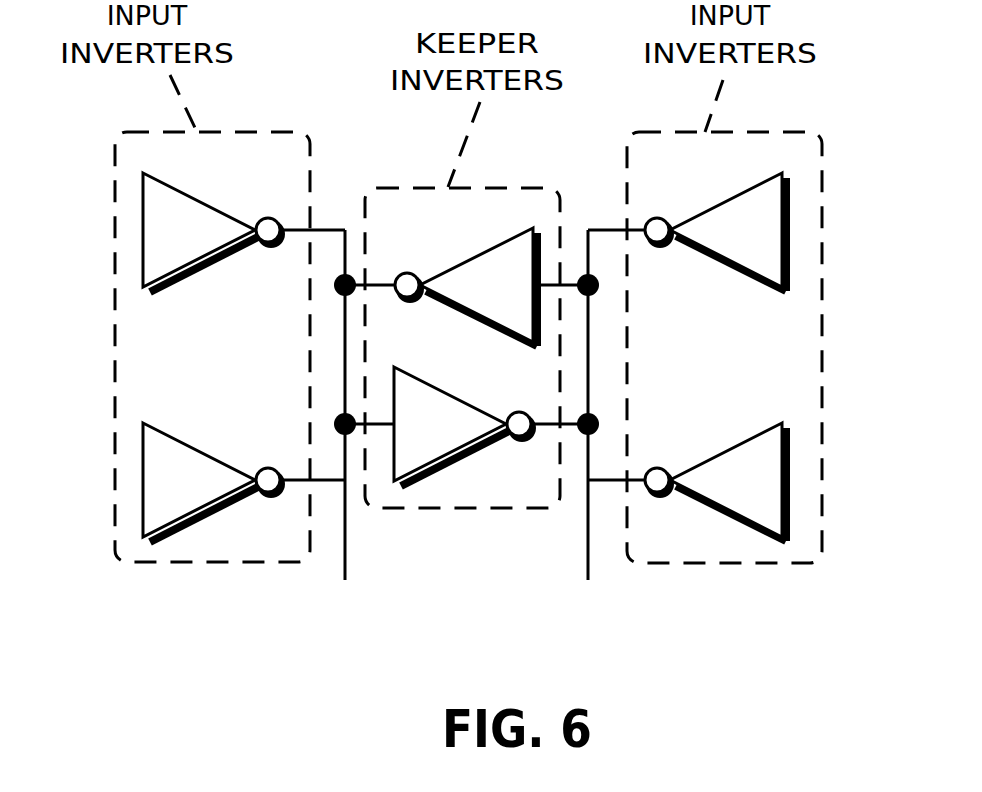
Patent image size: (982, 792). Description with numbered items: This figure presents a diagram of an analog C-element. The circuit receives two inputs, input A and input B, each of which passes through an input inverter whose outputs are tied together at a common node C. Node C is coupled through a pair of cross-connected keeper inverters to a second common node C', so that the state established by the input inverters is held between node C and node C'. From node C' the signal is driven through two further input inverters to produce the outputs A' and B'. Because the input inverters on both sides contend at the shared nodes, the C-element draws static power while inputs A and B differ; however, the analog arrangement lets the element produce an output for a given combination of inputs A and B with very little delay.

The input A is at (193, 232).
The input B is at (193, 482).
The node C is at (364, 431).
The output A' is at (768, 232).
The output B' is at (768, 482).
The node C' is at (588, 431).